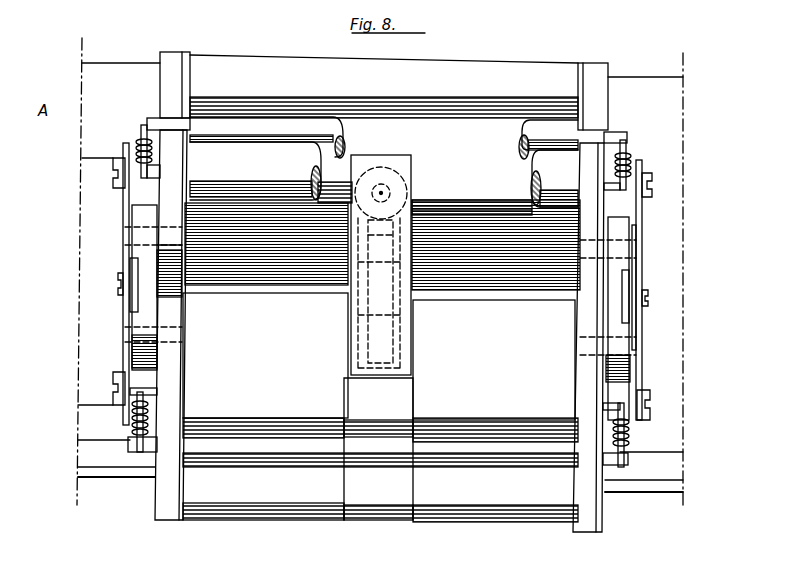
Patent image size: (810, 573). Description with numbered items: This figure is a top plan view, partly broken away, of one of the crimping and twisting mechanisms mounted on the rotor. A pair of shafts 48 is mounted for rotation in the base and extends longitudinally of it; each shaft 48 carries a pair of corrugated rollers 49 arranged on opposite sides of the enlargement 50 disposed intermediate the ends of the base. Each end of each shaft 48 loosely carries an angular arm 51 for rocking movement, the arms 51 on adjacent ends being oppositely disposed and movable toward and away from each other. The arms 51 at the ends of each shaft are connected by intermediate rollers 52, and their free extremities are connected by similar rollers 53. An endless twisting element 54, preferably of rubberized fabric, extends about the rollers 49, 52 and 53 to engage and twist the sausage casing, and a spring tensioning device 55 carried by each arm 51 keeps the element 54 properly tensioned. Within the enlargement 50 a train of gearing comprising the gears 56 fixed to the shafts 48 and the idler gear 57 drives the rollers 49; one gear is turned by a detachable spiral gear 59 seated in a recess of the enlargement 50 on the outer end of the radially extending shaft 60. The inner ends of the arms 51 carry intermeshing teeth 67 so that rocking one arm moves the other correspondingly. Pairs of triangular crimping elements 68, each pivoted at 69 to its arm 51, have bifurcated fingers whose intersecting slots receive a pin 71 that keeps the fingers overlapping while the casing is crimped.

The shaft 48 is at (150, 246).
The corrugated roller 49 is at (330, 199).
The enlargement 50 is at (412, 167).
The angular arm 51 is at (165, 186).
The intermediate roller 52 is at (512, 70).
The roller 53 is at (278, 150).
The endless twisting element 54 is at (300, 505).
The spring tensioning device 55 is at (144, 140).
The gear 56 is at (363, 327).
The idler gear 57 is at (405, 310).
The spiral gear 59 is at (390, 184).
The radially extending shaft 60 is at (380, 190).
The intermeshing teeth 67 is at (172, 290).
The crimping element 68 is at (125, 250).
The pivot 69 is at (113, 172).
The pin 71 is at (118, 283).